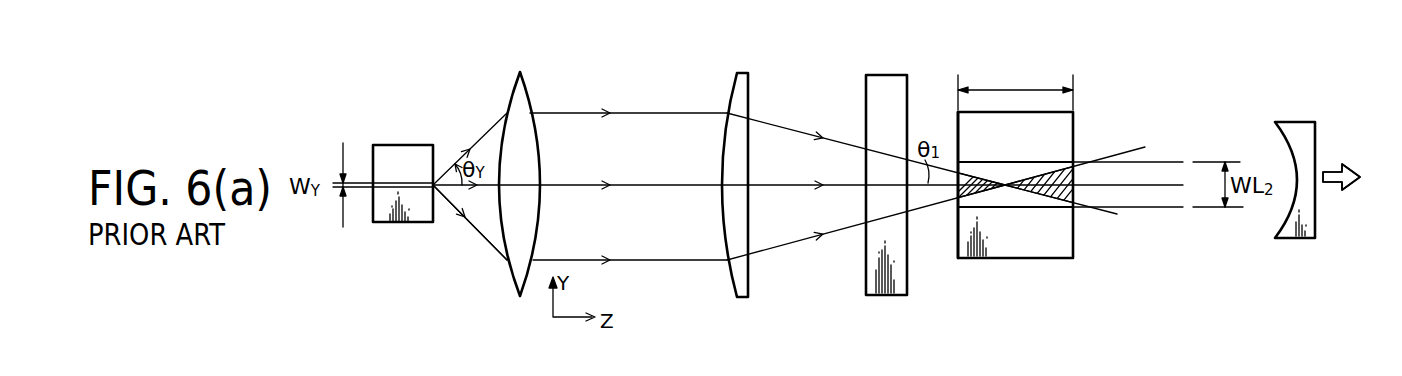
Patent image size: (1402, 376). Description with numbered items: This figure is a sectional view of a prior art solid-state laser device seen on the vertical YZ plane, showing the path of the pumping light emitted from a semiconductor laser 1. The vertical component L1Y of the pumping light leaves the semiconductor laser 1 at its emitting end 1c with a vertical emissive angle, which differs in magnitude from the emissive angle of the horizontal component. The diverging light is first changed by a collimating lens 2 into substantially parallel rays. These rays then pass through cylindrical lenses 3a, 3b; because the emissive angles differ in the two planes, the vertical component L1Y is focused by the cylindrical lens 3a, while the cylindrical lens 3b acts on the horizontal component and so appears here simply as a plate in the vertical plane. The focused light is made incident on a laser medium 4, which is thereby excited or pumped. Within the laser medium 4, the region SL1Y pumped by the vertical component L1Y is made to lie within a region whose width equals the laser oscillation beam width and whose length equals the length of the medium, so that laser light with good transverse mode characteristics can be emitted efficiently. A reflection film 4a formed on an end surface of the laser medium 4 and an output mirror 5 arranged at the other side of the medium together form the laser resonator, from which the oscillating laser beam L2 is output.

The semiconductor laser 1 is at (413, 145).
The emitting facet of semiconductor laser 1c is at (437, 189).
The vertical (Y) component of the laser light L1Y is at (470, 223).
The collimating lens 2 is at (528, 80).
The cylindrical lens 3a is at (748, 73).
The cylindrical lens 3b is at (897, 75).
The laser medium 4 is at (1073, 135).
The reflection film 4a is at (957, 238).
The region pumped by the vertical component SL1Y is at (982, 192).
The output mirror 5 is at (1295, 240).
The laser oscillation beam L2 is at (1341, 194).